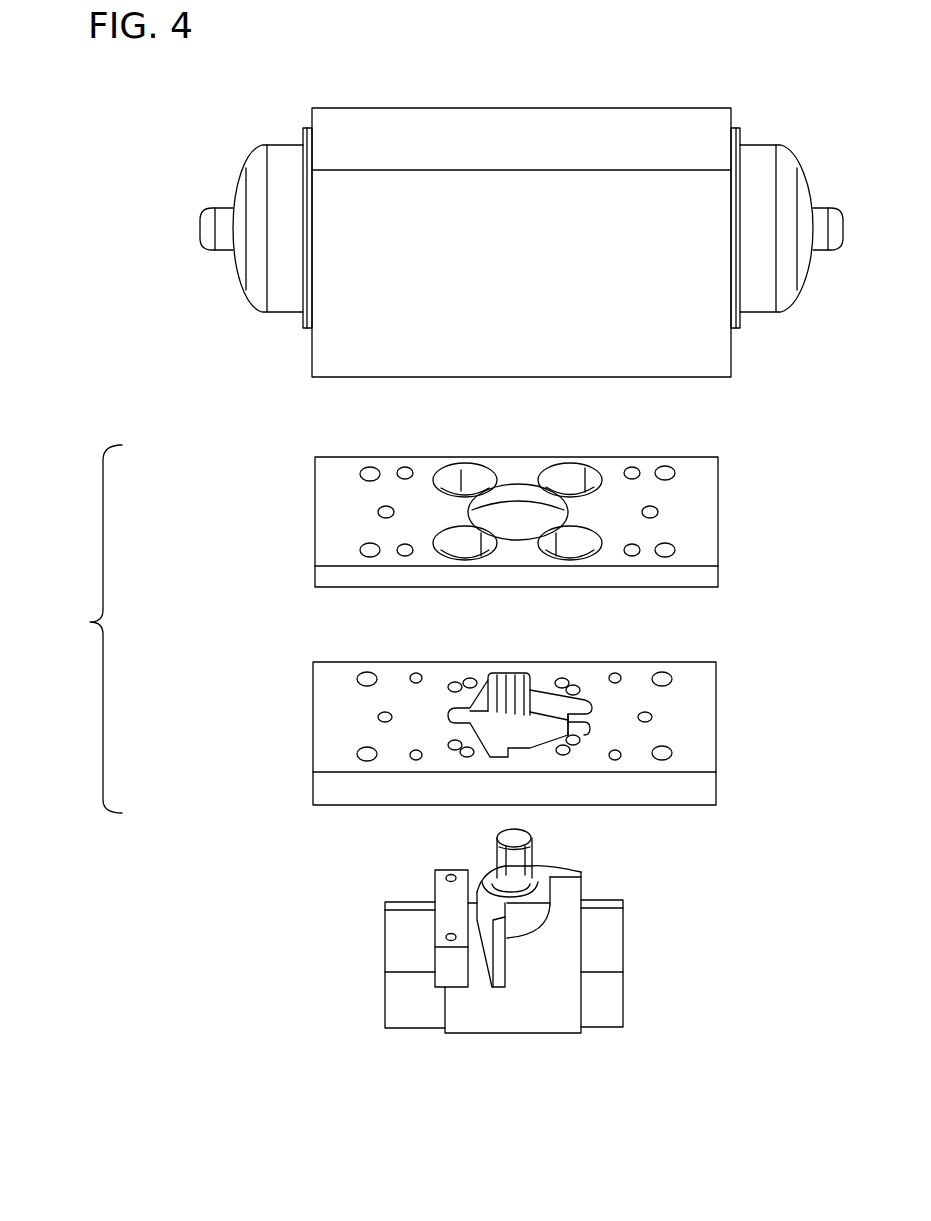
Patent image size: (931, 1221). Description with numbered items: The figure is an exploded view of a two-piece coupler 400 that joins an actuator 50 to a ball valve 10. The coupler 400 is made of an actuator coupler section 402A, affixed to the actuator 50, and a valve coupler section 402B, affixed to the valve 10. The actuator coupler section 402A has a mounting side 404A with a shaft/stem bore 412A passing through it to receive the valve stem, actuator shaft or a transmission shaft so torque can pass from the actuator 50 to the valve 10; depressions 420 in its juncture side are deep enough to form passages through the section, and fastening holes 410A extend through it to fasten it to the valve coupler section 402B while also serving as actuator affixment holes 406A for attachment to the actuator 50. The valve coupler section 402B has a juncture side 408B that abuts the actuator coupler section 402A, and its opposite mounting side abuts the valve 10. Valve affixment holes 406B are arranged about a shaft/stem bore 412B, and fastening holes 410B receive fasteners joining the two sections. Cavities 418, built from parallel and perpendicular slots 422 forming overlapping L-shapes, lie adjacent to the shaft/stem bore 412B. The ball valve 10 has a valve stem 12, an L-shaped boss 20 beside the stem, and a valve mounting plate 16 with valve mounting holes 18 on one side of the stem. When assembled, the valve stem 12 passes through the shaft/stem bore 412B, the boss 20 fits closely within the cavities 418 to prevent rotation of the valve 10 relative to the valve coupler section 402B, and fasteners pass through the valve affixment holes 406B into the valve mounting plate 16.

The actuator 50 is at (218, 186).
The coupler 400 is at (72, 629).
The actuator coupler section 402A is at (330, 462).
The mounting side 404A is at (330, 490).
The actuator affixment holes 406A is at (360, 550).
The depressions 420 is at (447, 470).
The shaft/stem bore 412A is at (517, 485).
The fastening holes 410A is at (675, 548).
The valve coupler section 402B is at (325, 788).
The juncture side 408B is at (330, 712).
The valve affixment holes 406B is at (409, 755).
The fastening holes 410B is at (673, 753).
The shaft/stem bore 412B is at (668, 687).
The slots 422 is at (500, 675).
The cavities 418 is at (592, 706).
The valve 10 is at (501, 931).
The valve stem 12 is at (533, 852).
The valve mounting plate 16 is at (445, 900).
The valve mounting holes 18 is at (450, 874).
The boss 20 is at (573, 886).